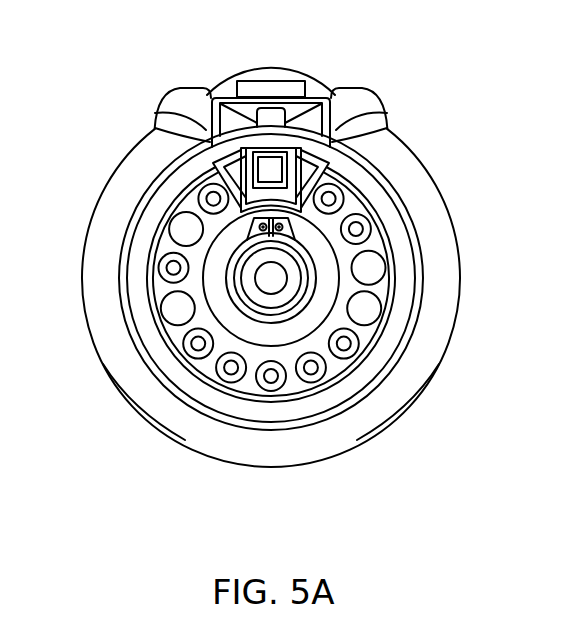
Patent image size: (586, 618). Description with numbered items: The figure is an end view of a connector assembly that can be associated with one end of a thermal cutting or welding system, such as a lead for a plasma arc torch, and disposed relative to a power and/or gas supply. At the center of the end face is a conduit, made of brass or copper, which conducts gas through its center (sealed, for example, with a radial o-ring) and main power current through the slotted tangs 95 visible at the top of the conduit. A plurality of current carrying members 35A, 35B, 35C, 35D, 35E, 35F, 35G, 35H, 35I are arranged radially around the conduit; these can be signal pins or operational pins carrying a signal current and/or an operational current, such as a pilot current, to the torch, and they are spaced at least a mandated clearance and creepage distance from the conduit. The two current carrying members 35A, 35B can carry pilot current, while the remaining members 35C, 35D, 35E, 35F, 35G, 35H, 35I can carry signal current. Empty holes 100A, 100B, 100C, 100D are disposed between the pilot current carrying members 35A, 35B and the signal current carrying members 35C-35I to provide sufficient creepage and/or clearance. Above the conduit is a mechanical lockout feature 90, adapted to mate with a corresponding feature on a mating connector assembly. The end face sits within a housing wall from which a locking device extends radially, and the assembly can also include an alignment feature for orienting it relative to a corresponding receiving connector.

The current carrying member 35A is at (341, 188).
The current carrying member 35B is at (369, 221).
The current carrying member 35C is at (354, 356).
The current carrying member 35D is at (317, 381).
The current carrying member 35E is at (271, 391).
The current carrying member 35F is at (223, 380).
The current carrying member 35G is at (188, 354).
The current carrying member 35H is at (159, 273).
The current carrying member 35I is at (200, 194).
The mechanical lockout feature 90 is at (250, 146).
The slotted tangs 95 is at (253, 209).
The empty hole 100A is at (384, 261).
The empty hole 100B is at (381, 311).
The empty hole 100C is at (165, 319).
The empty hole 100D is at (169, 231).